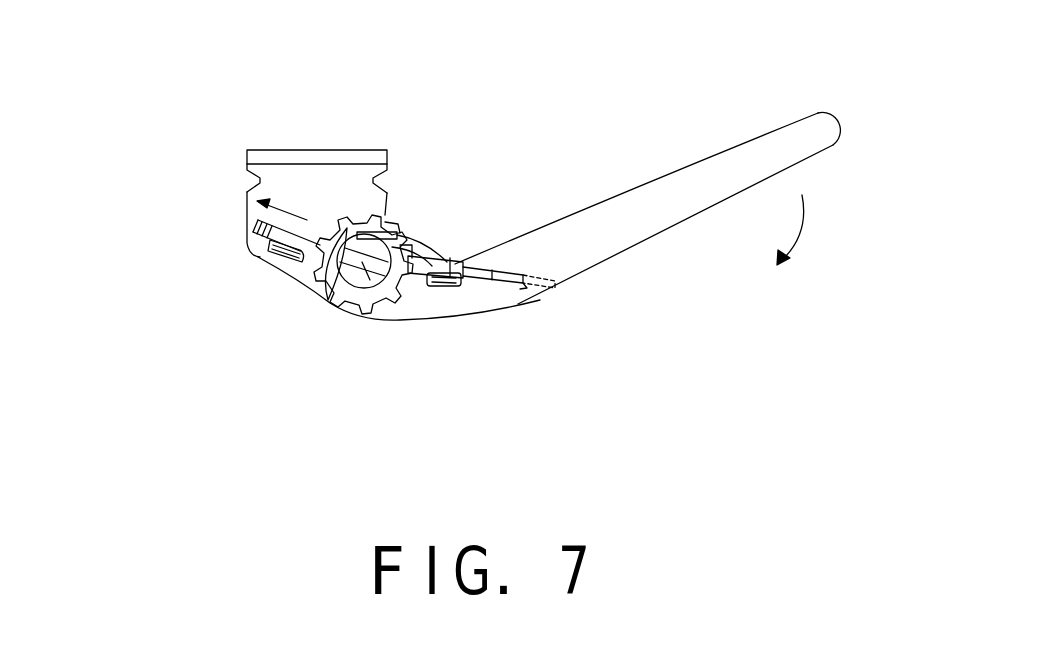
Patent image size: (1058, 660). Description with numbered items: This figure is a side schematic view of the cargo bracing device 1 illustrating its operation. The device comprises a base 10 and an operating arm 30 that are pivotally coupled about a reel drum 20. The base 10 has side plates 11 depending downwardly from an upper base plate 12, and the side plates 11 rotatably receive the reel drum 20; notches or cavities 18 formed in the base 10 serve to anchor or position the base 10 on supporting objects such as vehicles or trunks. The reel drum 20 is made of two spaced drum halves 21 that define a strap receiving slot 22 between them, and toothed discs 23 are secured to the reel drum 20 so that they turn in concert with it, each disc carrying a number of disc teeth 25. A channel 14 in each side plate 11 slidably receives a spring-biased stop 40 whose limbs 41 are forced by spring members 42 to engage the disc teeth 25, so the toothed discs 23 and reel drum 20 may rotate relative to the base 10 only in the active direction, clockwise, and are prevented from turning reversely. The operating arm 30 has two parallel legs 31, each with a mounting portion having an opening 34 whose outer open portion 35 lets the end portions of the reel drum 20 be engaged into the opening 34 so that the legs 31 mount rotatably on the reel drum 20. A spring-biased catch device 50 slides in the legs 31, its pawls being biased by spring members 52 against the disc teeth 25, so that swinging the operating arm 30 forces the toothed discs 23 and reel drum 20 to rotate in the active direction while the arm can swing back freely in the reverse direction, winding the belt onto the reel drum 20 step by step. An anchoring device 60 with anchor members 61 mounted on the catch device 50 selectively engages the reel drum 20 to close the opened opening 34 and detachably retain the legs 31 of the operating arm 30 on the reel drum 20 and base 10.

The cargo bracing device 1 is at (583, 97).
The base 10 is at (316, 147).
The side plates 11 is at (348, 183).
The base plate 12 is at (278, 150).
The channel 14 is at (250, 223).
The cavities 18 is at (247, 188).
The reel drum 20 is at (373, 318).
The drum halves 21 is at (346, 306).
The strap receiving slot 22 is at (381, 305).
The toothed discs 23 is at (377, 218).
The disc teeth 25 is at (390, 219).
The operating arm 30 is at (720, 232).
The legs 31 is at (756, 162).
The opening 34 is at (395, 300).
The open portion 35 is at (432, 290).
The stop 40 is at (268, 248).
The limbs 41 is at (316, 251).
The spring members 42 is at (276, 258).
The catch device 50 is at (468, 268).
The spring members 52 is at (455, 283).
The anchoring device 60 is at (410, 233).
The anchor members 61 is at (395, 225).